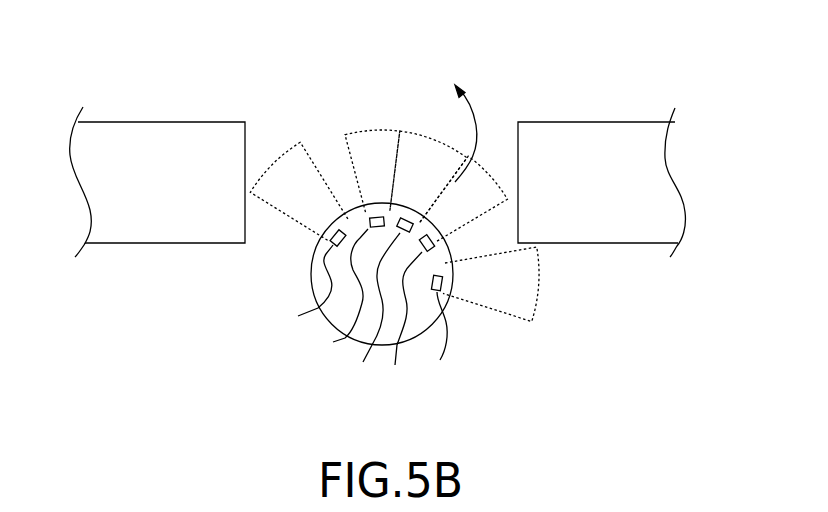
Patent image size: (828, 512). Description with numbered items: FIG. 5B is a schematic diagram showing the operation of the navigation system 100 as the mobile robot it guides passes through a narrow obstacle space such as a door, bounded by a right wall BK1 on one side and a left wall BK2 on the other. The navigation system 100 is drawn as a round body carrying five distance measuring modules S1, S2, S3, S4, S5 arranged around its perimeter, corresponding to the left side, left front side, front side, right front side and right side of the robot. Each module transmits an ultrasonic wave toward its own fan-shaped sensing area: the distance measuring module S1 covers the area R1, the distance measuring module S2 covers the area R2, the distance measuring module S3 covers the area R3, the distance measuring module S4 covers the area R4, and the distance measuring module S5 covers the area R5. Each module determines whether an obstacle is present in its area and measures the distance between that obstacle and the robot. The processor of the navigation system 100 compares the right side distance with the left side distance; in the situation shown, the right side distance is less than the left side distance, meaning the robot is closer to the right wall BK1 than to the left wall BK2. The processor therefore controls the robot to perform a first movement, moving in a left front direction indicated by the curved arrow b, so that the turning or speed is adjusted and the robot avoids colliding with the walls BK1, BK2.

The right wall BK1 is at (150, 130).
The left wall BK2 is at (590, 130).
The navigation system 100 is at (312, 278).
The distance measuring module S1 is at (307, 285).
The distance measuring module S2 is at (343, 292).
The distance measuring module S3 is at (376, 305).
The distance measuring module S4 is at (406, 315).
The distance measuring module S5 is at (434, 331).
The area R1 is at (299, 191).
The area R2 is at (372, 171).
The area R3 is at (428, 176).
The area R4 is at (464, 198).
The area R5 is at (491, 284).
The direction b is at (476, 133).